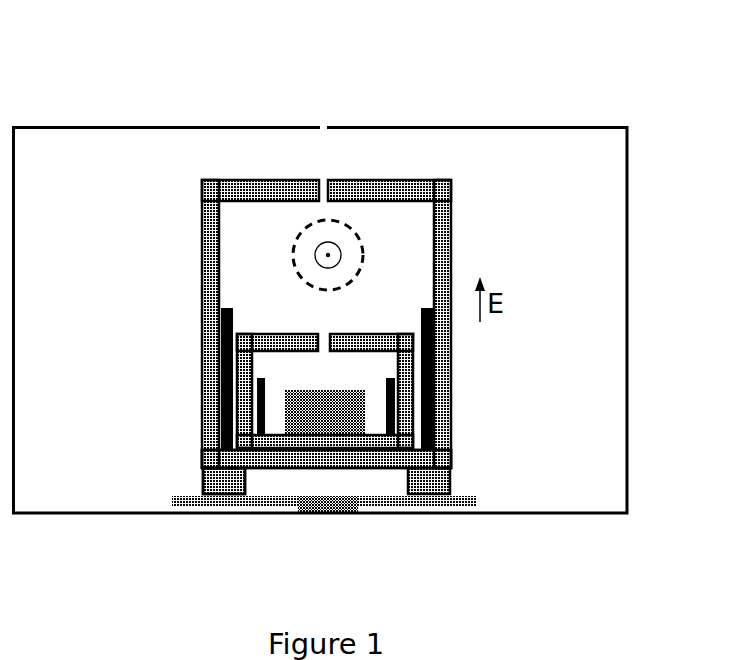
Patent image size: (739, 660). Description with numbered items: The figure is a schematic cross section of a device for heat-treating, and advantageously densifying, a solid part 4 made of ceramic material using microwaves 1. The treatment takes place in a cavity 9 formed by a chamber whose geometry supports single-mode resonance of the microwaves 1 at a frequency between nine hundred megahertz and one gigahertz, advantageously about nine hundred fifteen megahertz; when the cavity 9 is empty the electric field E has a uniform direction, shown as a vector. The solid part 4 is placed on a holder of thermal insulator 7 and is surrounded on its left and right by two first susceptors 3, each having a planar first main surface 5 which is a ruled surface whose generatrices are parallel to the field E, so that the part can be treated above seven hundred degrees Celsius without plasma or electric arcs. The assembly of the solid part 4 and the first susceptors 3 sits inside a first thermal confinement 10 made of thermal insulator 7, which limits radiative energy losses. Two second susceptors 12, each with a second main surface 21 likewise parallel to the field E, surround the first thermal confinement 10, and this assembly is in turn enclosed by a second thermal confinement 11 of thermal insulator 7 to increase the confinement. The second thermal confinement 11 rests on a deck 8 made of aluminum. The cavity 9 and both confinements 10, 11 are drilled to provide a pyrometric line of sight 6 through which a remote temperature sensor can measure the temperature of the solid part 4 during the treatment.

The microwaves 1 is at (328, 255).
The first susceptor 3 is at (395, 398).
The solid part made of ceramic material 4 is at (340, 418).
The first main surface 5 is at (262, 450).
The pyrometric line of sight 6 is at (322, 126).
The thermal insulator 7 is at (218, 456).
The deck 8 is at (323, 515).
The cavity 9 is at (173, 126).
The first thermal confinement 10 is at (222, 425).
The second thermal confinement 11 is at (207, 245).
The second susceptor 12 is at (228, 343).
The second main surface 21 is at (245, 395).